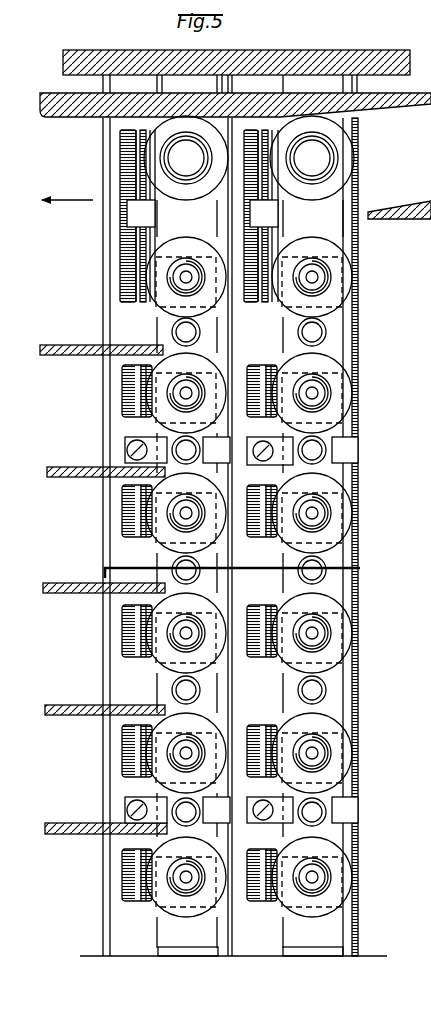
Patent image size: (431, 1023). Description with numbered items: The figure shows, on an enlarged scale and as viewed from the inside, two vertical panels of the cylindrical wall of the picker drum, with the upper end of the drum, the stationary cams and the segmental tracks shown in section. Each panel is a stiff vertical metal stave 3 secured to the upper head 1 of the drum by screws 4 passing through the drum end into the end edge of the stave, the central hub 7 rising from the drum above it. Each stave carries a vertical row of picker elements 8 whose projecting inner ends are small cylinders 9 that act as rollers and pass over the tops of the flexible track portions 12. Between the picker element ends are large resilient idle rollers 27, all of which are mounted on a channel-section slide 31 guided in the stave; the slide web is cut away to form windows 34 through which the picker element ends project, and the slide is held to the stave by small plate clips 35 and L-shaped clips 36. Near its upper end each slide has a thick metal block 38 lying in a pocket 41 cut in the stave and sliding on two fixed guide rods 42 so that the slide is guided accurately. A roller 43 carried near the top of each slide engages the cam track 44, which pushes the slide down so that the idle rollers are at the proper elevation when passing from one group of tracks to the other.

The upper head 1 is at (235, 72).
The stave 3 is at (352, 138).
The screw 4 is at (117, 50).
The central hub 7 is at (187, 85).
The picker element 8 is at (120, 157).
The inner end roller 9 is at (327, 333).
The track working portion 12 is at (86, 358).
The idle roller 27 is at (180, 245).
The slide 31 is at (173, 920).
The window 34 is at (175, 335).
The clip 35 is at (125, 438).
The L-shaped clip 36 is at (218, 440).
The metal block 38 is at (137, 213).
The pocket 41 is at (124, 243).
The guide rod 42 is at (145, 256).
The upper roller 43 is at (343, 166).
The cam track 44 is at (388, 117).